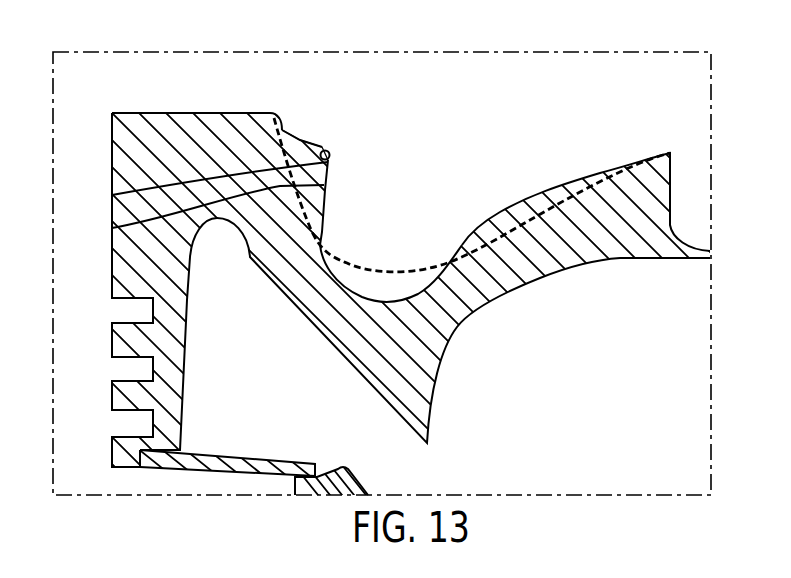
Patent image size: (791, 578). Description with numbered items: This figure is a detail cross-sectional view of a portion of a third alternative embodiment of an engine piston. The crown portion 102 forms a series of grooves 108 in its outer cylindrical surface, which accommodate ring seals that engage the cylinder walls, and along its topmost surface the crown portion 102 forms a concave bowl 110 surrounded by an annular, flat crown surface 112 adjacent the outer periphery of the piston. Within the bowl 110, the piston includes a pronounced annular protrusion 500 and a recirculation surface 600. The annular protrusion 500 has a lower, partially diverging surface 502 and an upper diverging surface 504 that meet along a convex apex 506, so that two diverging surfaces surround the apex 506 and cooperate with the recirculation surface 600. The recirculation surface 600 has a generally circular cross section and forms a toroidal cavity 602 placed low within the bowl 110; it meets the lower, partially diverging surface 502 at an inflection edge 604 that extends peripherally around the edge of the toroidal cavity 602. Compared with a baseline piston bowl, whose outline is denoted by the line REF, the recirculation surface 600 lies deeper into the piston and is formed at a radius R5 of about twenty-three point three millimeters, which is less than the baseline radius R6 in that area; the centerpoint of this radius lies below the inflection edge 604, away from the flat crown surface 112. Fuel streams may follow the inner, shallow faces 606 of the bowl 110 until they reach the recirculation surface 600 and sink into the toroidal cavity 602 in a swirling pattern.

The crown portion 102 is at (116, 256).
The grooves 108 is at (100, 309).
The bowl 110 is at (615, 75).
The flat crown surface 112 is at (127, 113).
The annular protrusion 500 is at (330, 145).
The lower, partially diverging surface 502 is at (112, 195).
The upper diverging surface 504 is at (300, 140).
The convex apex 506 is at (330, 157).
The recirculation surface 600 is at (112, 228).
The toroidal cavity 602 is at (384, 291).
The inflection edge 604 is at (326, 185).
The inner, shallow faces 606 is at (541, 192).
The radius of the recirculation surface R5 is at (353, 287).
The baseline radius R6 is at (347, 257).
The baseline piston bowl outline REF is at (597, 175).